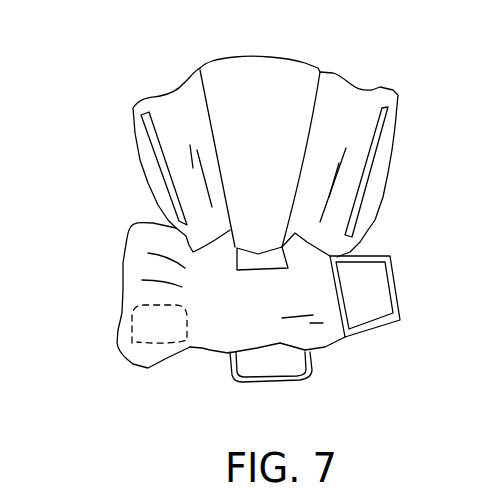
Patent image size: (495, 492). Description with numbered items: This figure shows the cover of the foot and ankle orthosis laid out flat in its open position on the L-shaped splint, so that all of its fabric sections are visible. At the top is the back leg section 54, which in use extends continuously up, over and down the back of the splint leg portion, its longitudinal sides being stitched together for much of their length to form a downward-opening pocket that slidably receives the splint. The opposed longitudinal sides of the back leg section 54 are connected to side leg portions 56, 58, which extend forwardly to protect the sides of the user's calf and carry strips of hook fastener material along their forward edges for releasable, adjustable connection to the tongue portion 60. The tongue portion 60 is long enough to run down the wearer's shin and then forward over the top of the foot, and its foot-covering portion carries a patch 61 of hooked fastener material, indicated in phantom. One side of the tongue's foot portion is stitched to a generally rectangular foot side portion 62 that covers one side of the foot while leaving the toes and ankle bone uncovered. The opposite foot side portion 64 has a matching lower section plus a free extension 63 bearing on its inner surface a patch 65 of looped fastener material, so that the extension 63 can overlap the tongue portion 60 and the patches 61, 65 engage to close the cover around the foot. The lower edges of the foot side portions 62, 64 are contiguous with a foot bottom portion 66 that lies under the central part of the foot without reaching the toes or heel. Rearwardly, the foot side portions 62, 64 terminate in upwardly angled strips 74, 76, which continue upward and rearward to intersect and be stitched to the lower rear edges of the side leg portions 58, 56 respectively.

The back leg section 54 is at (280, 77).
The side leg portion 56 is at (358, 100).
The side leg portion 58 is at (197, 100).
The tongue portion 60 is at (241, 334).
The patch 61 is at (120, 340).
The foot side portion 62 is at (215, 333).
The free extension 63 is at (400, 302).
The foot side portion 64 is at (327, 330).
The patch 65 is at (372, 290).
The foot bottom portion 66 is at (260, 313).
The upwardly angled strip 74 is at (220, 250).
The upwardly angled strip 76 is at (325, 250).